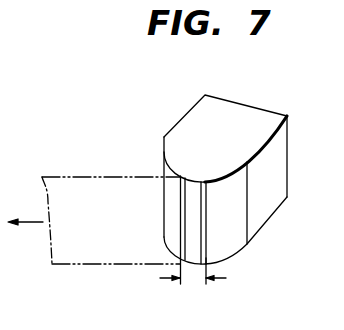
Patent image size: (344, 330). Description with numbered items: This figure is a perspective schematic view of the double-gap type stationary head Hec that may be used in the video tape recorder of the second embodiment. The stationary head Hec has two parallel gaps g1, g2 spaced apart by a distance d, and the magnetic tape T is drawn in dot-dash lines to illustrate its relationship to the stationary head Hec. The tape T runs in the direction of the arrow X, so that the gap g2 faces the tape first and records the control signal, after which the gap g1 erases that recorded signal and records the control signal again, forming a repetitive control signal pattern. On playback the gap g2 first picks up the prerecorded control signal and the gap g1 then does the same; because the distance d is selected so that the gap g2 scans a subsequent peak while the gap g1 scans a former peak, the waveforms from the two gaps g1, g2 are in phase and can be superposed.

The double-gap type stationary head Hec is at (275, 152).
The gap g1 is at (181, 212).
The gap g2 is at (207, 213).
The distance d is at (193, 273).
The magnetic tape T is at (95, 186).
The arrow X is at (38, 221).